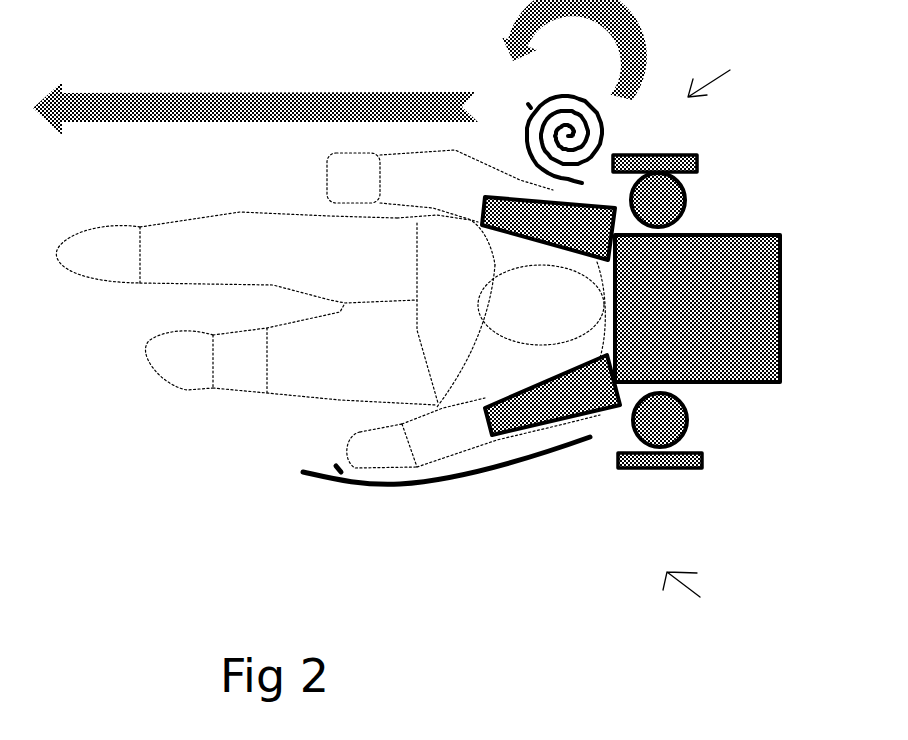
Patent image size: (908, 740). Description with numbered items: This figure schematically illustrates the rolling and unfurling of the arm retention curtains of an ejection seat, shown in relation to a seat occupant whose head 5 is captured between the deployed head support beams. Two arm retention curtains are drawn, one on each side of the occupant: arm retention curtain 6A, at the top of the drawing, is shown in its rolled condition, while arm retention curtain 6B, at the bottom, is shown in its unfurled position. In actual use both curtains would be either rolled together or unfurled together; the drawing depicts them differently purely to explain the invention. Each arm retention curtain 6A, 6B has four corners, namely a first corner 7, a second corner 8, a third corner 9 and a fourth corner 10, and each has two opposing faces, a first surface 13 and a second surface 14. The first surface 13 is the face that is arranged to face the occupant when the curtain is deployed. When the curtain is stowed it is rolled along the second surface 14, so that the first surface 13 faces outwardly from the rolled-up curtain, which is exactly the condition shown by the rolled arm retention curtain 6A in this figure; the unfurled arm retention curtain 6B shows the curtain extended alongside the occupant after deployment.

The seat occupant's head 5 is at (577, 305).
The first corner 7 is at (689, 310).
The second corner 8 is at (580, 183).
The third corner 9 is at (445, 332).
The fourth corner 10 is at (445, 332).
The first surface 13 is at (530, 105).
The second surface 14 is at (341, 490).
The arm retention curtain 6A is at (728, 77).
The arm retention curtain 6B is at (693, 609).